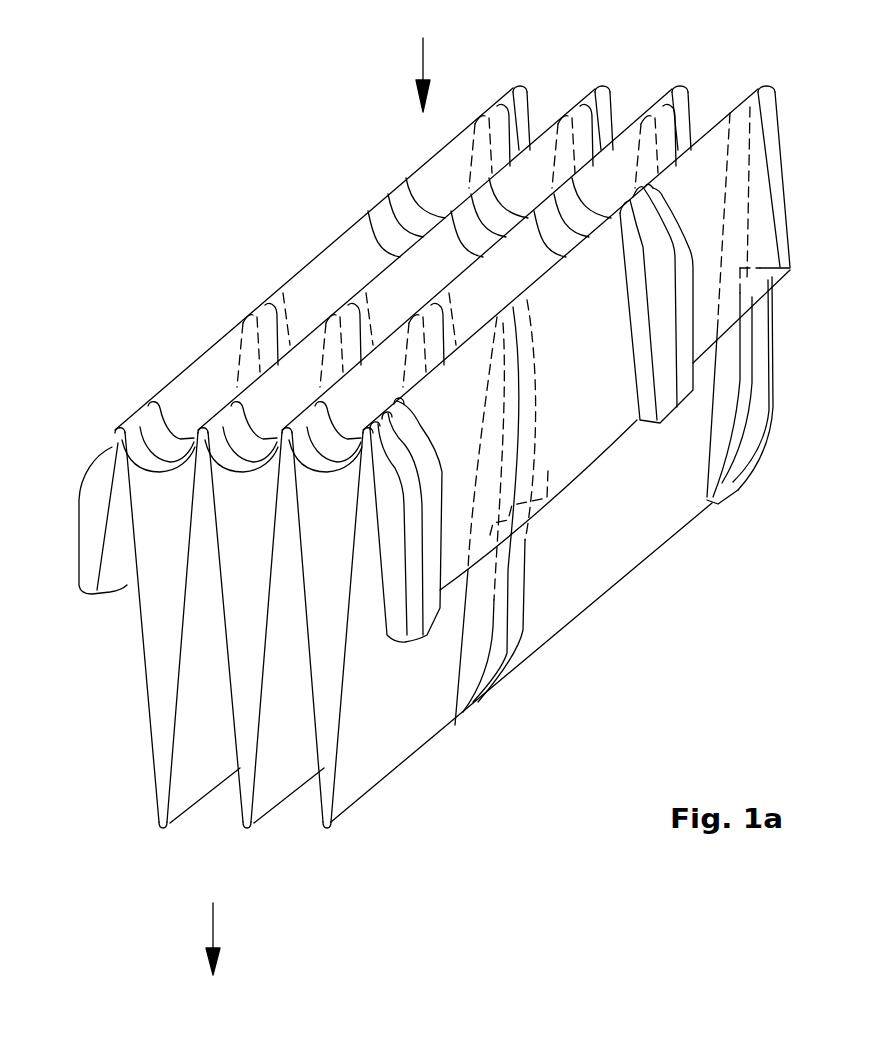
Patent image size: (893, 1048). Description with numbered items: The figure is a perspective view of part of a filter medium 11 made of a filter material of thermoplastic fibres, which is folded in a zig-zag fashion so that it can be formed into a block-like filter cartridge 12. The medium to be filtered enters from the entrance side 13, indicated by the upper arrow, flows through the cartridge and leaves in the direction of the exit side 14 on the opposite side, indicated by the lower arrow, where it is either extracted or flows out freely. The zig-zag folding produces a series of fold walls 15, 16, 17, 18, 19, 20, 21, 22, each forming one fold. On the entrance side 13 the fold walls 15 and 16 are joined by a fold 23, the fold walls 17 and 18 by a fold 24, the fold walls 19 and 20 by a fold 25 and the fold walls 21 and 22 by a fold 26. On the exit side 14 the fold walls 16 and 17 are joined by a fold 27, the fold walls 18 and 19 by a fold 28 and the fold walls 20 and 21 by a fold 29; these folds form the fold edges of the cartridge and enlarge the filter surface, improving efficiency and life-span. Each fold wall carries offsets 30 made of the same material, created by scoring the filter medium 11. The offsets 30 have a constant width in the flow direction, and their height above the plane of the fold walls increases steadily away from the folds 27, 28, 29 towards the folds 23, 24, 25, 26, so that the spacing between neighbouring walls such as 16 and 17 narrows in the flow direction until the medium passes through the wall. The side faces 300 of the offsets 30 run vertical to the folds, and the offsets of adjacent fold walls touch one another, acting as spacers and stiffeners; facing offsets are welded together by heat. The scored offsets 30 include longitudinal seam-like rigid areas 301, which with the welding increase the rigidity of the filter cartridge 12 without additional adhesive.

The filter medium 11 is at (614, 566).
The filter cartridge 12 is at (181, 143).
The entrance side 13 is at (423, 57).
The exit side 14 is at (213, 959).
The fold wall 15 is at (132, 573).
The fold wall 16 is at (178, 387).
The fold wall 17 is at (203, 767).
The fold wall 18 is at (390, 295).
The fold wall 19 is at (288, 755).
The fold wall 20 is at (460, 293).
The fold wall 21 is at (373, 747).
The fold wall 22 is at (567, 295).
The fold 23 is at (518, 84).
The fold 24 is at (600, 85).
The fold 25 is at (676, 85).
The fold 26 is at (760, 85).
The fold 27 is at (173, 826).
The fold 28 is at (256, 826).
The fold 29 is at (334, 826).
The offset 30 is at (397, 193).
The side face 300 is at (162, 680).
The rigid area 301 is at (147, 413).